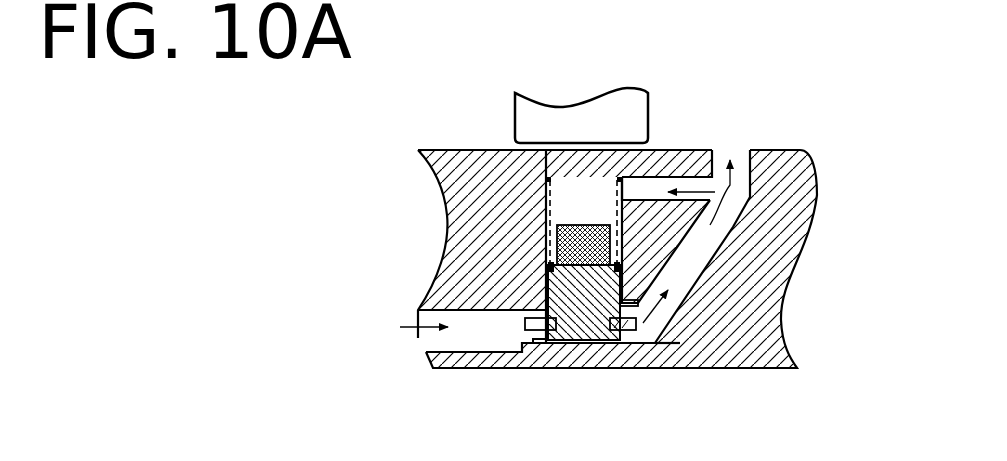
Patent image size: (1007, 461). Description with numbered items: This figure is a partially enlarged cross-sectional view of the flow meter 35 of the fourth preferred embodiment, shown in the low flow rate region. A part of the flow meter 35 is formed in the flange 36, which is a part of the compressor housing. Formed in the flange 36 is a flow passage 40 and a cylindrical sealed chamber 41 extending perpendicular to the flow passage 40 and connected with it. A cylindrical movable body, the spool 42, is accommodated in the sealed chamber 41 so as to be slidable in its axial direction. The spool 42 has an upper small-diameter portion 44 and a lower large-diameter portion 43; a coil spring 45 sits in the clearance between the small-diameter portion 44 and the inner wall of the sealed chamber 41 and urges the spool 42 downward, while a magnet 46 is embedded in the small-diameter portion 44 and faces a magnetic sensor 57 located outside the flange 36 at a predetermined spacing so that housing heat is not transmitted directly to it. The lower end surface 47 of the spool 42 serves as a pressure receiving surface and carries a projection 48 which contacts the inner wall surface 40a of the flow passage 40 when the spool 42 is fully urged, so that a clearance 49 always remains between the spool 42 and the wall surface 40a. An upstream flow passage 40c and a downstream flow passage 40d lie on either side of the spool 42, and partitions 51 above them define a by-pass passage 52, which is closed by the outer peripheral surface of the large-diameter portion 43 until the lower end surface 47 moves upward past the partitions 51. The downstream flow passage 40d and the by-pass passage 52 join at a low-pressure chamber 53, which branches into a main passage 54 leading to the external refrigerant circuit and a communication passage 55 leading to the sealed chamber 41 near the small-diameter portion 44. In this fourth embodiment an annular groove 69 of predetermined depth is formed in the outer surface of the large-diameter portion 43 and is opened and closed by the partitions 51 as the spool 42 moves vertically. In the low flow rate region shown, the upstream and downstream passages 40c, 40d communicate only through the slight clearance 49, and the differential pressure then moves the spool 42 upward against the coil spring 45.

The flow meter 35 is at (492, 116).
The flange 36 is at (457, 175).
The flow passage 40 is at (477, 368).
The inner wall surface of the flow passage 40a is at (543, 346).
The upstream flow passage 40c is at (520, 349).
The downstream flow passage 40d is at (680, 368).
The sealed chamber 41 is at (595, 214).
The spool 42 is at (570, 348).
The lower large-diameter portion 43 is at (550, 307).
The upper small-diameter portion 44 is at (556, 240).
The coil spring 45 is at (502, 150).
The magnet 46 is at (624, 246).
The lower end surface 47 is at (557, 348).
The projection 48 is at (587, 348).
The clearance 49 is at (600, 346).
The partitions 51 is at (524, 324).
The by-pass passage 52 is at (512, 318).
The low-pressure chamber 53 is at (790, 237).
The main passage 54 is at (740, 158).
The communication passage 55 is at (688, 180).
The magnetic sensor 57 is at (560, 114).
The annular groove 69 is at (627, 346).